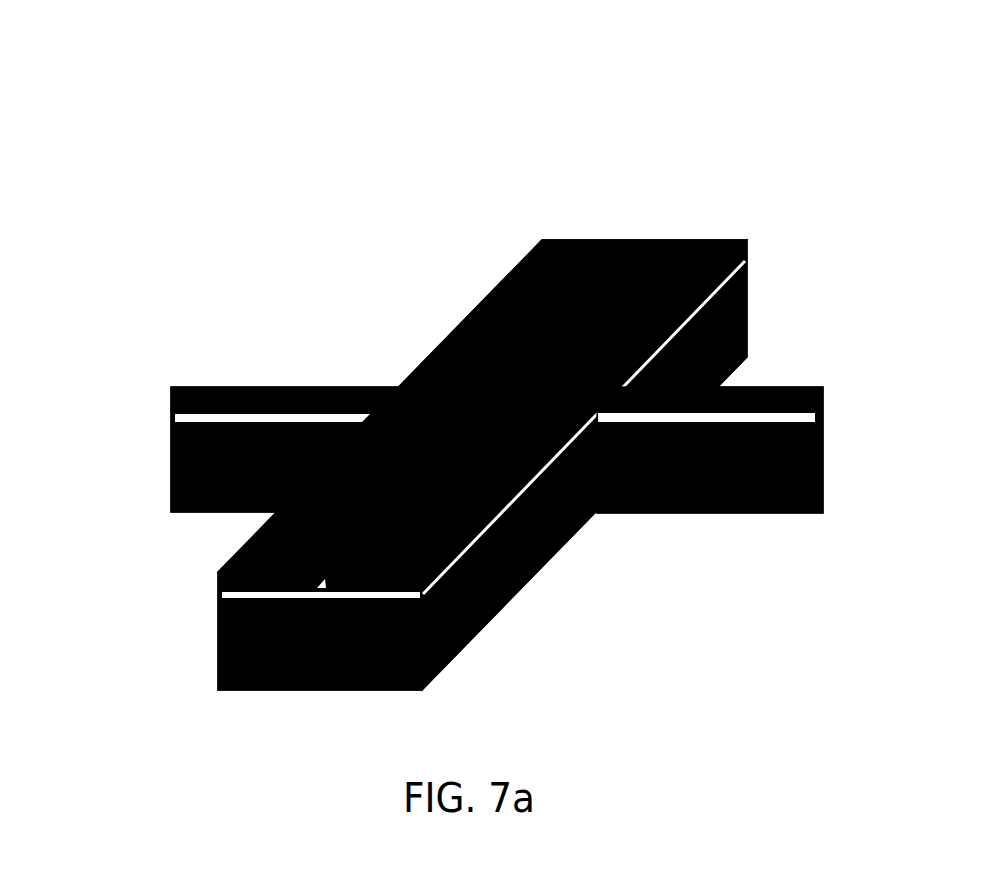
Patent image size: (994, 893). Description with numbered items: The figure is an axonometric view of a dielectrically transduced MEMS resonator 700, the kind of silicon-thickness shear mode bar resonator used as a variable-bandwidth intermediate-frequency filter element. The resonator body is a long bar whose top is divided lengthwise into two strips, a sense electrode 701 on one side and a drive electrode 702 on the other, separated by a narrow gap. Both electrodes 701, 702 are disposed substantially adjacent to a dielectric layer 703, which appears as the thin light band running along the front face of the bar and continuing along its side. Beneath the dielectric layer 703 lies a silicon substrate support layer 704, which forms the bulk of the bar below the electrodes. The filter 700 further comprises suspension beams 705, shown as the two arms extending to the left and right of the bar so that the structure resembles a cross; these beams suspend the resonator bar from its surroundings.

The dielectrically transduced MEMS resonator 700 is at (218, 208).
The sense electrode 701 is at (578, 240).
The drive electrode 702 is at (682, 240).
The dielectric layer 703 is at (218, 594).
The silicon substrate support layer 704 is at (538, 572).
The suspension beams 705 is at (150, 448).